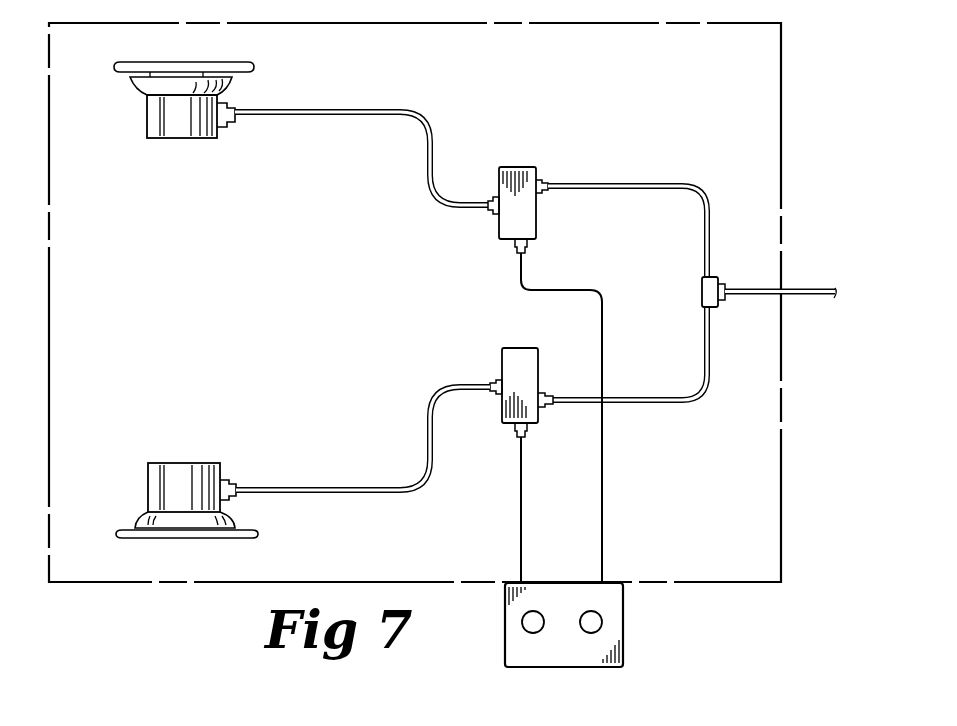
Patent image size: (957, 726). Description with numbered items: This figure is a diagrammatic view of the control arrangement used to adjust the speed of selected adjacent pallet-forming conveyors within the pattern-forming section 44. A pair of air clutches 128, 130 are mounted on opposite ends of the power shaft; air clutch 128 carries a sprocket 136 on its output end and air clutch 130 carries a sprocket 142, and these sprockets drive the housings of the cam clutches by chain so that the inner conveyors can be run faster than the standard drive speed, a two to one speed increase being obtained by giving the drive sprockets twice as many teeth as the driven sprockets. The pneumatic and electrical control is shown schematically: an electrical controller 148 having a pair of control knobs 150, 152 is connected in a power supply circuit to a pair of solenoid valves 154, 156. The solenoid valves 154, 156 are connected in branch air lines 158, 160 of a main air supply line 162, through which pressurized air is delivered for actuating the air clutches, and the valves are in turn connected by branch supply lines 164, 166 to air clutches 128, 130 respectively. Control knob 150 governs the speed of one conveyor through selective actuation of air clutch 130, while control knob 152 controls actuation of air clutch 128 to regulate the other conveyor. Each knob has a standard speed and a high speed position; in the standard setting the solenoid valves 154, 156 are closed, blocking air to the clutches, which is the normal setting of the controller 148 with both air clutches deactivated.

The pattern-forming section 44 is at (140, 584).
The air clutch 128 is at (170, 139).
The air clutch 130 is at (157, 472).
The sprocket 136 is at (256, 67).
The sprocket 142 is at (256, 534).
The electrical controller 148 is at (568, 648).
The control knob 150 is at (527, 632).
The control knob 152 is at (602, 622).
The solenoid valve 154 is at (506, 348).
The solenoid valve 156 is at (498, 240).
The branch air line 158 is at (620, 180).
The branch air line 160 is at (665, 407).
The main air supply line 162 is at (818, 287).
The branch supply line 164 is at (352, 118).
The branch supply line 166 is at (338, 482).